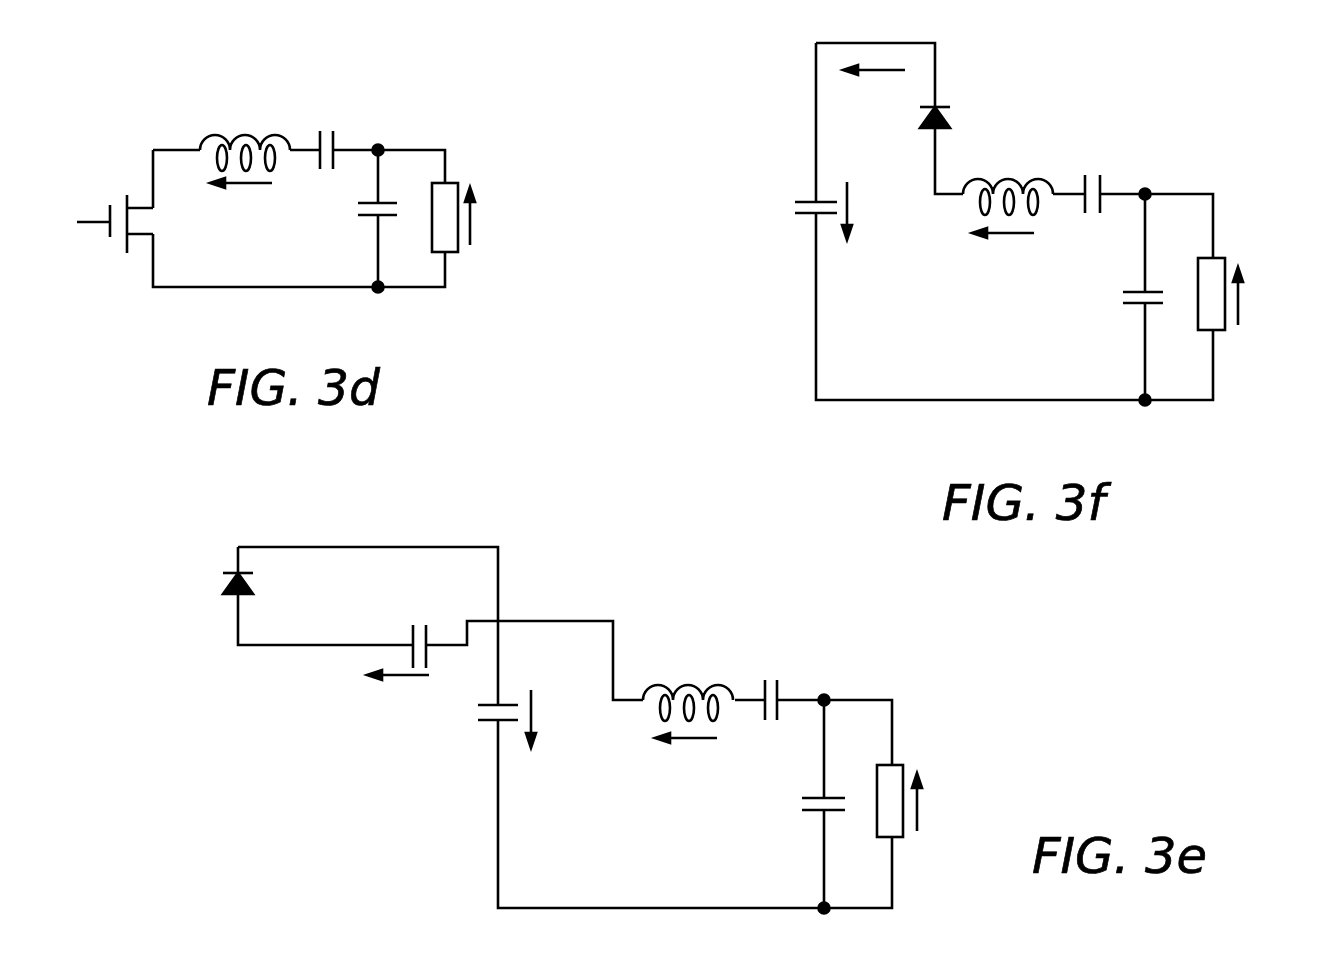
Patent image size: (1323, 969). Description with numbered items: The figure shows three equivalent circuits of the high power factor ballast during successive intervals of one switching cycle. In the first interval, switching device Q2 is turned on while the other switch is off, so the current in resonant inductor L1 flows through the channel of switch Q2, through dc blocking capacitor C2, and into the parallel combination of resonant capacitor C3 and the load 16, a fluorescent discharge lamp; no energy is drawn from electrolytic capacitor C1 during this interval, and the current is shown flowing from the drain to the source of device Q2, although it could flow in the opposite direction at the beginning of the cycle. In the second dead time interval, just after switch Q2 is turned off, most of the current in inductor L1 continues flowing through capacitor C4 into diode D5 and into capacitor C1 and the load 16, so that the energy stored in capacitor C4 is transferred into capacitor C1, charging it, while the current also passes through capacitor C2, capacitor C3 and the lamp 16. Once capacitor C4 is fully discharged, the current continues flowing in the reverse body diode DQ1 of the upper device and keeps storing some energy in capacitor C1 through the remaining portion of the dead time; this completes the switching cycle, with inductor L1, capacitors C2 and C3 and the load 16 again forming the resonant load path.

In FIG. 3D, the load 16 is at (450, 182).
In FIG. 3F, the load 16 is at (1222, 258).
In FIG. 3E, the load 16 is at (900, 765).
In FIG. 3D, the resonant inductor L1 is at (245, 147).
In FIG. 3F, the resonant inductor L1 is at (1008, 190).
In FIG. 3E, the resonant inductor L1 is at (688, 695).
In FIG. 3F, the electrolytic capacitor C1 is at (804, 211).
In FIG. 3E, the electrolytic capacitor C1 is at (488, 719).
In FIG. 3D, the dc blocking capacitor C2 is at (322, 130).
In FIG. 3F, the dc blocking capacitor C2 is at (1089, 175).
In FIG. 3E, the dc blocking capacitor C2 is at (769, 681).
In FIG. 3D, the resonant capacitor C3 is at (357, 207).
In FIG. 3F, the resonant capacitor C3 is at (1121, 292).
In FIG. 3E, the resonant capacitor C3 is at (802, 799).
In FIG. 3E, the capacitor C4 is at (400, 636).
In FIG. 3D, the switching device Q2 is at (126, 224).
In FIG. 3F, the body diode of device Q1 DQ1 is at (904, 112).
In FIG. 3E, the diode D5 is at (217, 584).